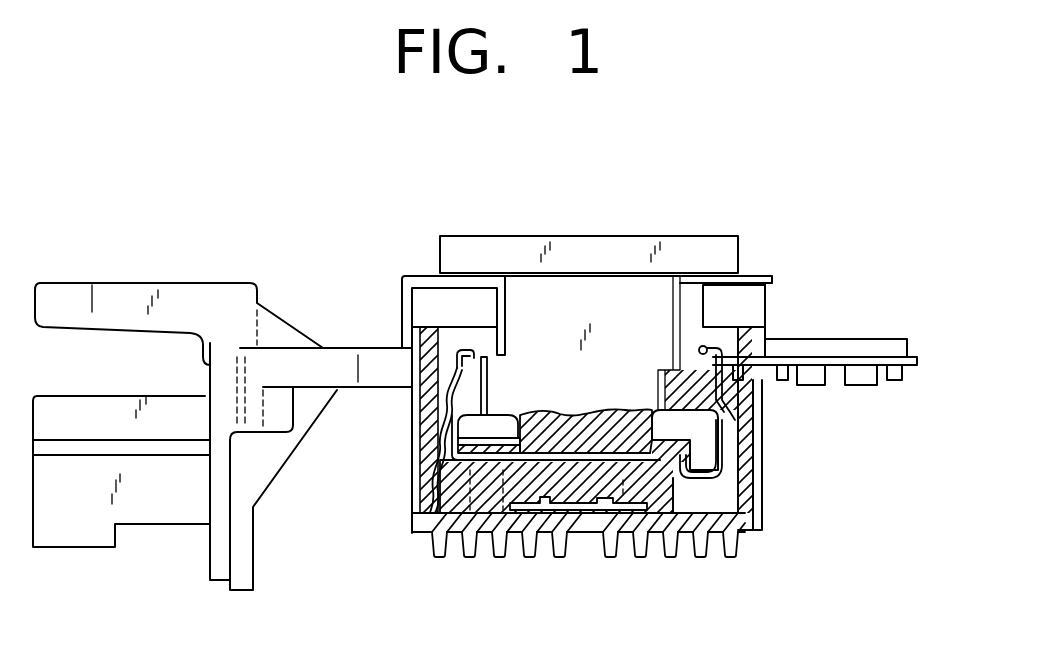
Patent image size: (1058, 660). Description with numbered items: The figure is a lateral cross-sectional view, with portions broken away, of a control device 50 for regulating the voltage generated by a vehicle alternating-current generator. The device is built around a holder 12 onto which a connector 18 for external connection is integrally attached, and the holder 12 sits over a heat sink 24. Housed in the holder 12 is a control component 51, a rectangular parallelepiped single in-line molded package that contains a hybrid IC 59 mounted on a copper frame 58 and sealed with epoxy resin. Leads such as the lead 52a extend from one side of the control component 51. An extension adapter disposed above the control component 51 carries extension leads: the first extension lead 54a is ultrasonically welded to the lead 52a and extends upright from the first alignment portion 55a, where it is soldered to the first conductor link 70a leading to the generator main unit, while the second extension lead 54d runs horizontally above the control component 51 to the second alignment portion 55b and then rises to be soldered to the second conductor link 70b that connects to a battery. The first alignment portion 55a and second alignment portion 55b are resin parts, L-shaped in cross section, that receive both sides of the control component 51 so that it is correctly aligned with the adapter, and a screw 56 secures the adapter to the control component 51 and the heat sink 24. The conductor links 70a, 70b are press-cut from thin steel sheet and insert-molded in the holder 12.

The holder 12 is at (678, 236).
The connector 18 is at (183, 512).
The heat sink 24 is at (568, 528).
The control device 50 is at (767, 505).
The control component 51 is at (657, 503).
The lead 52a is at (698, 517).
The first extension lead 54a is at (723, 452).
The second extension lead 54d is at (432, 438).
The first alignment portion 55a is at (722, 432).
The second alignment portion 55b is at (418, 512).
The screw 56 is at (507, 412).
The copper frame 58 is at (515, 517).
The hybrid IC 59 is at (592, 507).
The first conductor link 70a is at (702, 357).
The second conductor link 70b is at (449, 356).